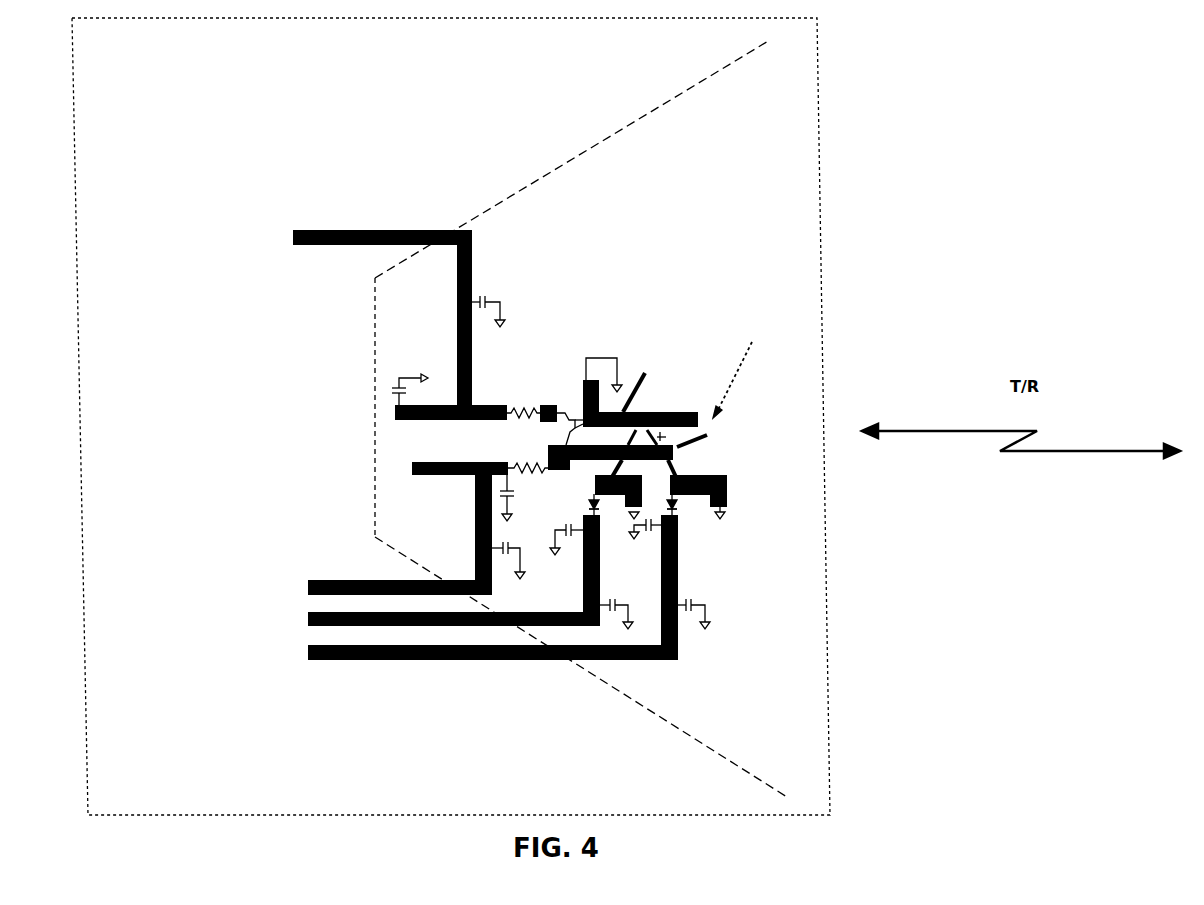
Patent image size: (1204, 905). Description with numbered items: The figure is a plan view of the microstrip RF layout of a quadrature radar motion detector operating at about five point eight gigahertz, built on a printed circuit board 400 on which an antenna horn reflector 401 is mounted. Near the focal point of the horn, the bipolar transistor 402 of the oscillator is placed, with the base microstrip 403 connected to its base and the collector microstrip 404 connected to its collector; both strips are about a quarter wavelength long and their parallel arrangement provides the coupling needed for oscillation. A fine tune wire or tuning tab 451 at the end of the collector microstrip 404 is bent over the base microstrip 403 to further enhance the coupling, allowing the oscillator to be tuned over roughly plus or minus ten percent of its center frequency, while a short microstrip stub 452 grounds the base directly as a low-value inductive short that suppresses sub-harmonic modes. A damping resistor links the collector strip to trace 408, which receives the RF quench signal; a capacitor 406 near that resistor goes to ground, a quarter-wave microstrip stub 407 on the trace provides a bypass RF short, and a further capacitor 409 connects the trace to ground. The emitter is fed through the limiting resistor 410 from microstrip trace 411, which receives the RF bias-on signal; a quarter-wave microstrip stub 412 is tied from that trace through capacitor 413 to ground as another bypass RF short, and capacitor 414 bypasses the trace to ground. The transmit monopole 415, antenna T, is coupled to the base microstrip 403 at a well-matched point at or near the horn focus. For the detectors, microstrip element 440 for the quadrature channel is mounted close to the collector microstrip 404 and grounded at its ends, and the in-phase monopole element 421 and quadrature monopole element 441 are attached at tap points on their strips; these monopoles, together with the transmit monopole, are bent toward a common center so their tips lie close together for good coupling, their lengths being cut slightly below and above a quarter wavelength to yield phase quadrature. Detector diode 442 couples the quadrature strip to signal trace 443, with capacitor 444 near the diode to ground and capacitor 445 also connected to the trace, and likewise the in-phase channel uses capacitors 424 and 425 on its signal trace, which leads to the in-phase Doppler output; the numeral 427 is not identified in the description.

The printed circuit board 400 is at (451, 416).
The antenna horn reflector 401 is at (533, 176).
The bipolar transistor 402 is at (574, 412).
The microstrip M1 403 is at (675, 411).
The microstrip M2 404 is at (680, 462).
The capacitor 406 is at (516, 500).
The microstrip stub 407 is at (406, 470).
The trace 408 is at (470, 535).
The capacitor 409 is at (505, 562).
The limiting resistor 410 is at (530, 400).
The microstrip trace 411 is at (473, 240).
The microstrip stub 412 is at (431, 400).
The capacitor 413 is at (392, 388).
The capacitor 414 is at (497, 300).
The transmit monopole 415 is at (634, 370).
The monopole element 421 is at (598, 472).
The capacitor 424 is at (574, 538).
The capacitor 425 is at (610, 612).
The in-phase doppler output trace 427 is at (600, 555).
The microstrip element 440 is at (730, 508).
The monopole element 441 is at (683, 470).
The detector diode 442 is at (682, 498).
The signal trace 443 is at (680, 583).
The capacitor 444 is at (652, 533).
The capacitor 445 is at (690, 620).
The tuning tab 451 is at (690, 433).
The microstrip stub 452 is at (583, 375).